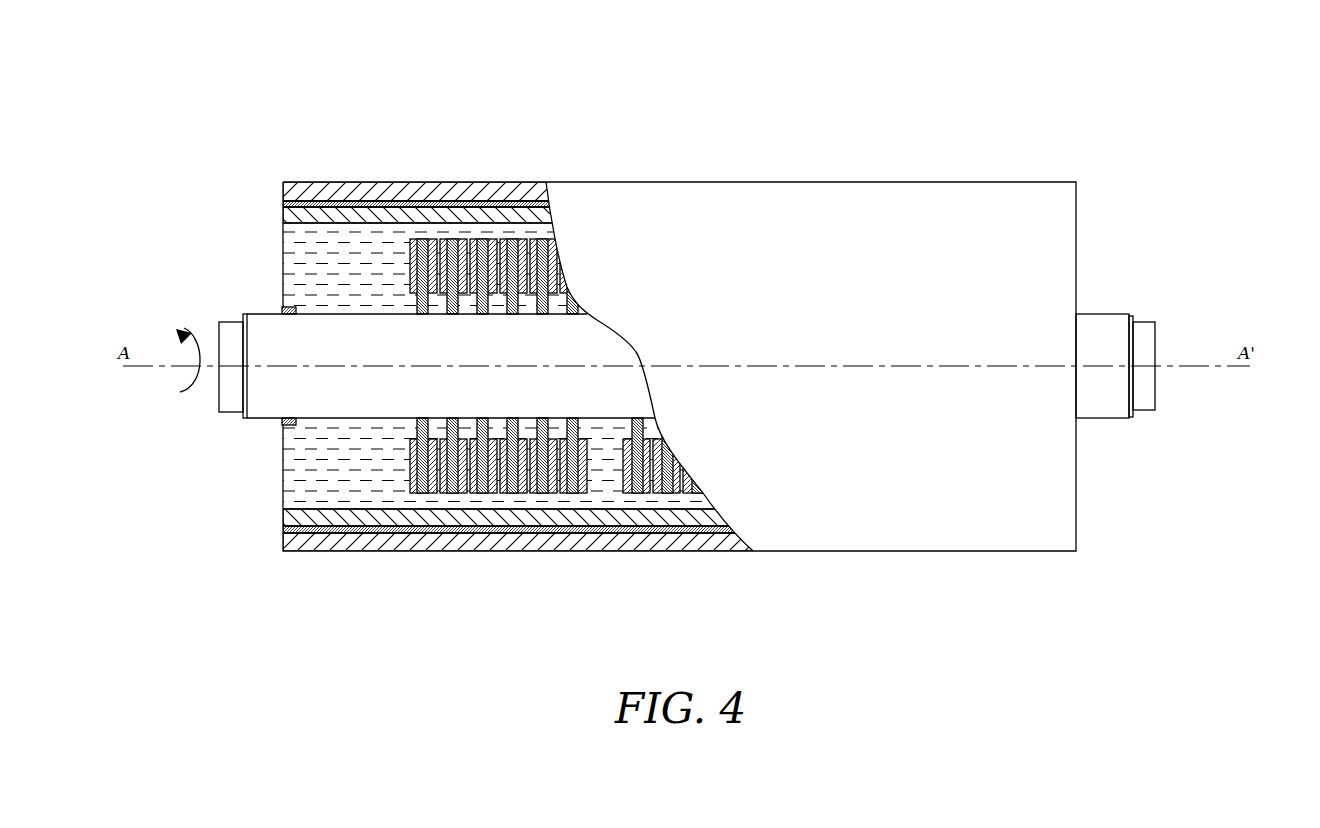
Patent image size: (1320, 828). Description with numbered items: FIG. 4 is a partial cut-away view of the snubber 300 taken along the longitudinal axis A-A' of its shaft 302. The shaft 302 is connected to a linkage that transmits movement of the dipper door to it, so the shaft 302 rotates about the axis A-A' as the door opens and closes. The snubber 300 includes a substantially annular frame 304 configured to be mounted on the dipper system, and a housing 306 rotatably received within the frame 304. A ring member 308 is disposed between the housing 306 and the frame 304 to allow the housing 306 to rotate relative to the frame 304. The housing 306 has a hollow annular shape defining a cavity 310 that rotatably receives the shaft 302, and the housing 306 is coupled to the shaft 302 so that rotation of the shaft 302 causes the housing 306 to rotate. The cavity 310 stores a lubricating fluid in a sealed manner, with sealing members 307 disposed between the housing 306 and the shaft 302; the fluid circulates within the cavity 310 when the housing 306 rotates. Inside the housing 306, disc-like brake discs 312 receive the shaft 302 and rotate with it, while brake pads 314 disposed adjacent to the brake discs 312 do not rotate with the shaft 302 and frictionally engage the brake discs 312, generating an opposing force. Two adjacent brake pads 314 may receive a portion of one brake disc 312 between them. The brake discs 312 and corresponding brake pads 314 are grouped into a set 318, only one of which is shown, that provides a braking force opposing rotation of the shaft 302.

The snubber 300 is at (246, 80).
The shaft 302 is at (255, 337).
The frame 304 is at (333, 192).
The housing 306 is at (480, 217).
The sealing member 307 is at (288, 308).
The ring member 308 is at (435, 204).
The cavity 310 is at (347, 273).
The brake disc 312 is at (545, 252).
The brake pad 314 is at (553, 276).
The set 318 is at (391, 233).